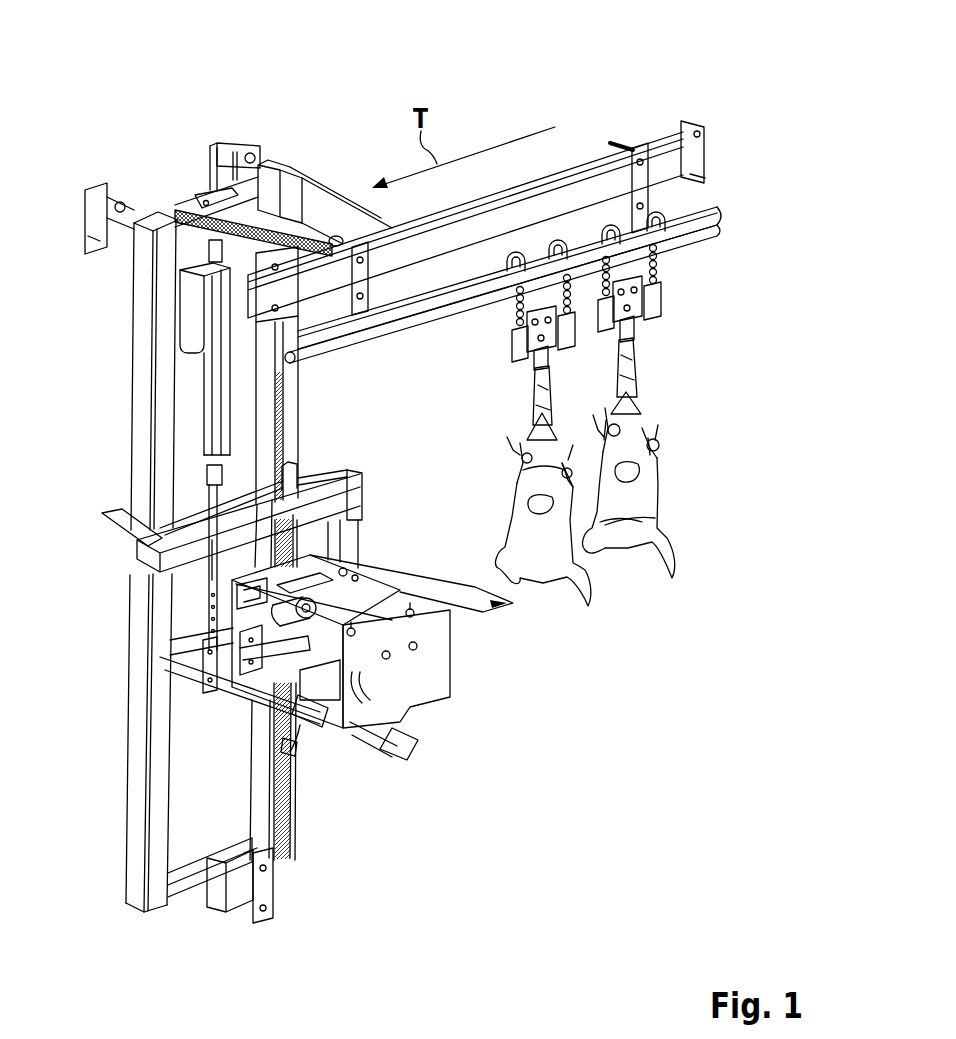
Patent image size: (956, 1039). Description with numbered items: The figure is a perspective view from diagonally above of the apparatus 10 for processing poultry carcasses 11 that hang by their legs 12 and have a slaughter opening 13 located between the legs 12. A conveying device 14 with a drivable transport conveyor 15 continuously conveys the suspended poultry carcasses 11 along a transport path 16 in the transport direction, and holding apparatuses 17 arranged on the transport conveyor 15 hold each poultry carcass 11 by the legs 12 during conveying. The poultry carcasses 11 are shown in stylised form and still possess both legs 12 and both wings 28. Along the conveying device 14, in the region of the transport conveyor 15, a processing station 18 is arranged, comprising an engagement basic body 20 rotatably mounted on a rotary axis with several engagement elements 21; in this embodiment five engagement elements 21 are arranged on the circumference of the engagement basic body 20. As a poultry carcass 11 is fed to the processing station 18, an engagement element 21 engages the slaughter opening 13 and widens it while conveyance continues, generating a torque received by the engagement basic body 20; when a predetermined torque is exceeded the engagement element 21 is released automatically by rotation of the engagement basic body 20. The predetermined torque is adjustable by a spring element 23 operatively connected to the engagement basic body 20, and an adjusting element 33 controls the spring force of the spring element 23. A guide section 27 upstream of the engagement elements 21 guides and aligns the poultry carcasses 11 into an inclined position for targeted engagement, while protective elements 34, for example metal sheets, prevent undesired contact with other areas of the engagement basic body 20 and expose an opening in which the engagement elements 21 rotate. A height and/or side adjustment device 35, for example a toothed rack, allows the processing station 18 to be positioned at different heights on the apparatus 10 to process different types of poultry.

The apparatus 10 is at (145, 127).
The poultry carcass 11 is at (543, 568).
The legs 12 is at (652, 474).
The slaughter opening 13 is at (530, 507).
The conveying device 14 is at (510, 251).
The transport conveyor 15 is at (662, 284).
The transport path 16 is at (443, 312).
The holding apparatus 17 is at (638, 411).
The processing station 18 is at (439, 760).
The engagement basic body 20 is at (330, 656).
The engagement element 21 is at (300, 628).
The spring element 23 is at (331, 713).
The guide section 27 is at (470, 605).
The wings 28 is at (665, 542).
The adjusting element 33 is at (293, 752).
The protective elements 34 is at (256, 575).
The height and/or side adjustment device 35 is at (192, 475).